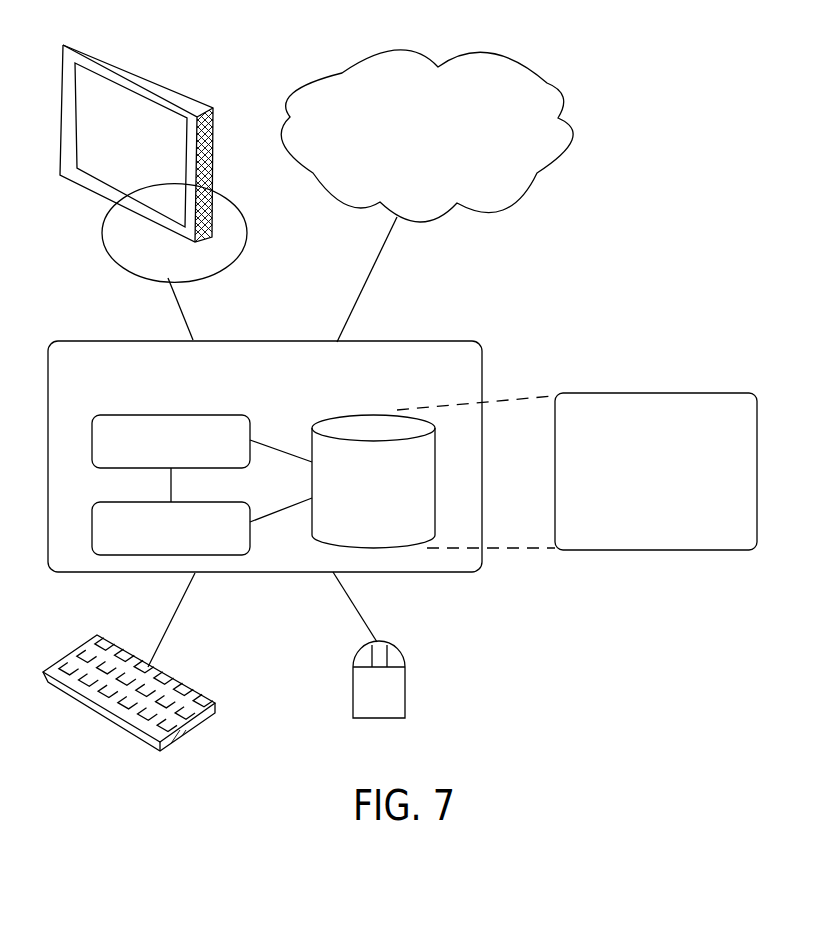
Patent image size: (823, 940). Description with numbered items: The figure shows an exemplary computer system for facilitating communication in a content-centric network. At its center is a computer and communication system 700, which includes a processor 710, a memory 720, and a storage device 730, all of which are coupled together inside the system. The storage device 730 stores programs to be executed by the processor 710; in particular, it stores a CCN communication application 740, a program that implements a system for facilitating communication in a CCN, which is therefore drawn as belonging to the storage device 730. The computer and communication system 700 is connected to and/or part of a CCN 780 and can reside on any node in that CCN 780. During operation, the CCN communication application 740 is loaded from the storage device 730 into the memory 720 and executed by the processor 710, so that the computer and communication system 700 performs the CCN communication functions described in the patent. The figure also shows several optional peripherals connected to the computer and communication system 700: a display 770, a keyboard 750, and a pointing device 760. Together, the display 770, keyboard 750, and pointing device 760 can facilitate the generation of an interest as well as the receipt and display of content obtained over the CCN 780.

The computer and communication system 700 is at (430, 341).
The processor 710 is at (212, 414).
The memory 720 is at (212, 501).
The storage device 730 is at (318, 545).
The CCN communication application 740 is at (633, 393).
The keyboard 750 is at (190, 730).
The pointing device 760 is at (380, 720).
The display 770 is at (150, 64).
The CCN 780 is at (553, 86).